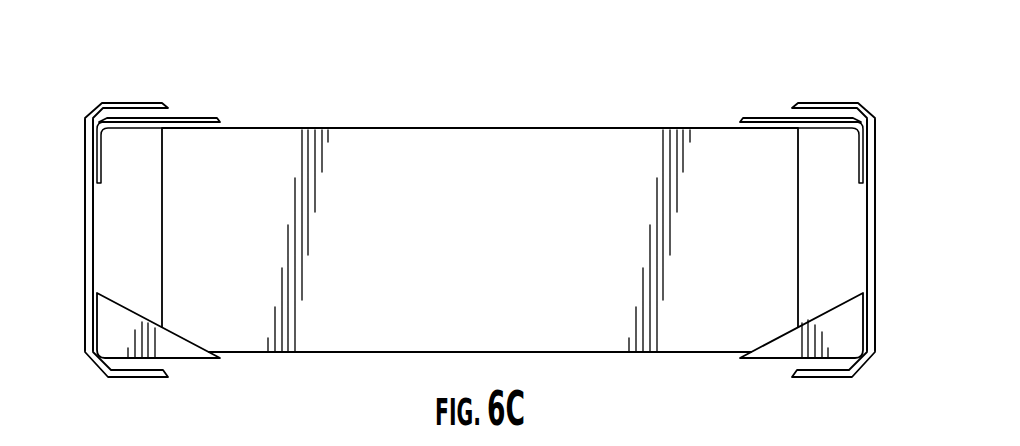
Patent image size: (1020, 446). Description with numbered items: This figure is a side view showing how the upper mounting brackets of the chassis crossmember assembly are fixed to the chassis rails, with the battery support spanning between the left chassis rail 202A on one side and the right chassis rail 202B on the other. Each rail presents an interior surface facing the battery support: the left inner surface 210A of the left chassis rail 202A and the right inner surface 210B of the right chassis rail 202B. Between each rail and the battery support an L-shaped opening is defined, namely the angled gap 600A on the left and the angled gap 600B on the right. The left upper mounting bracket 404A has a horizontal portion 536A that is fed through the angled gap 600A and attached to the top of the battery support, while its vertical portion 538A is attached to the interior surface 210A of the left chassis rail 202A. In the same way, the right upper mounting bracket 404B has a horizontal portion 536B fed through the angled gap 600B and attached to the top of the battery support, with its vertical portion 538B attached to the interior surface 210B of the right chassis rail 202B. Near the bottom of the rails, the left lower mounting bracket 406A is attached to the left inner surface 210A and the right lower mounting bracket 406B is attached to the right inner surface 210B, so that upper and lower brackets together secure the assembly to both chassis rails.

The angled gap 600A is at (130, 99).
The angled gap 600B is at (830, 99).
The left upper mounting bracket 404A is at (113, 122).
The right upper mounting bracket 404B is at (847, 122).
The horizontal portion 536A is at (192, 119).
The horizontal portion 536B is at (768, 119).
The vertical portion 538A is at (96, 162).
The vertical portion 538B is at (864, 162).
The left inner surface 210A is at (94, 213).
The right inner surface 210B is at (866, 240).
The left chassis rail 202A is at (84, 248).
The right chassis rail 202B is at (876, 222).
The left lower mounting bracket 406A is at (110, 337).
The right lower mounting bracket 406B is at (848, 332).